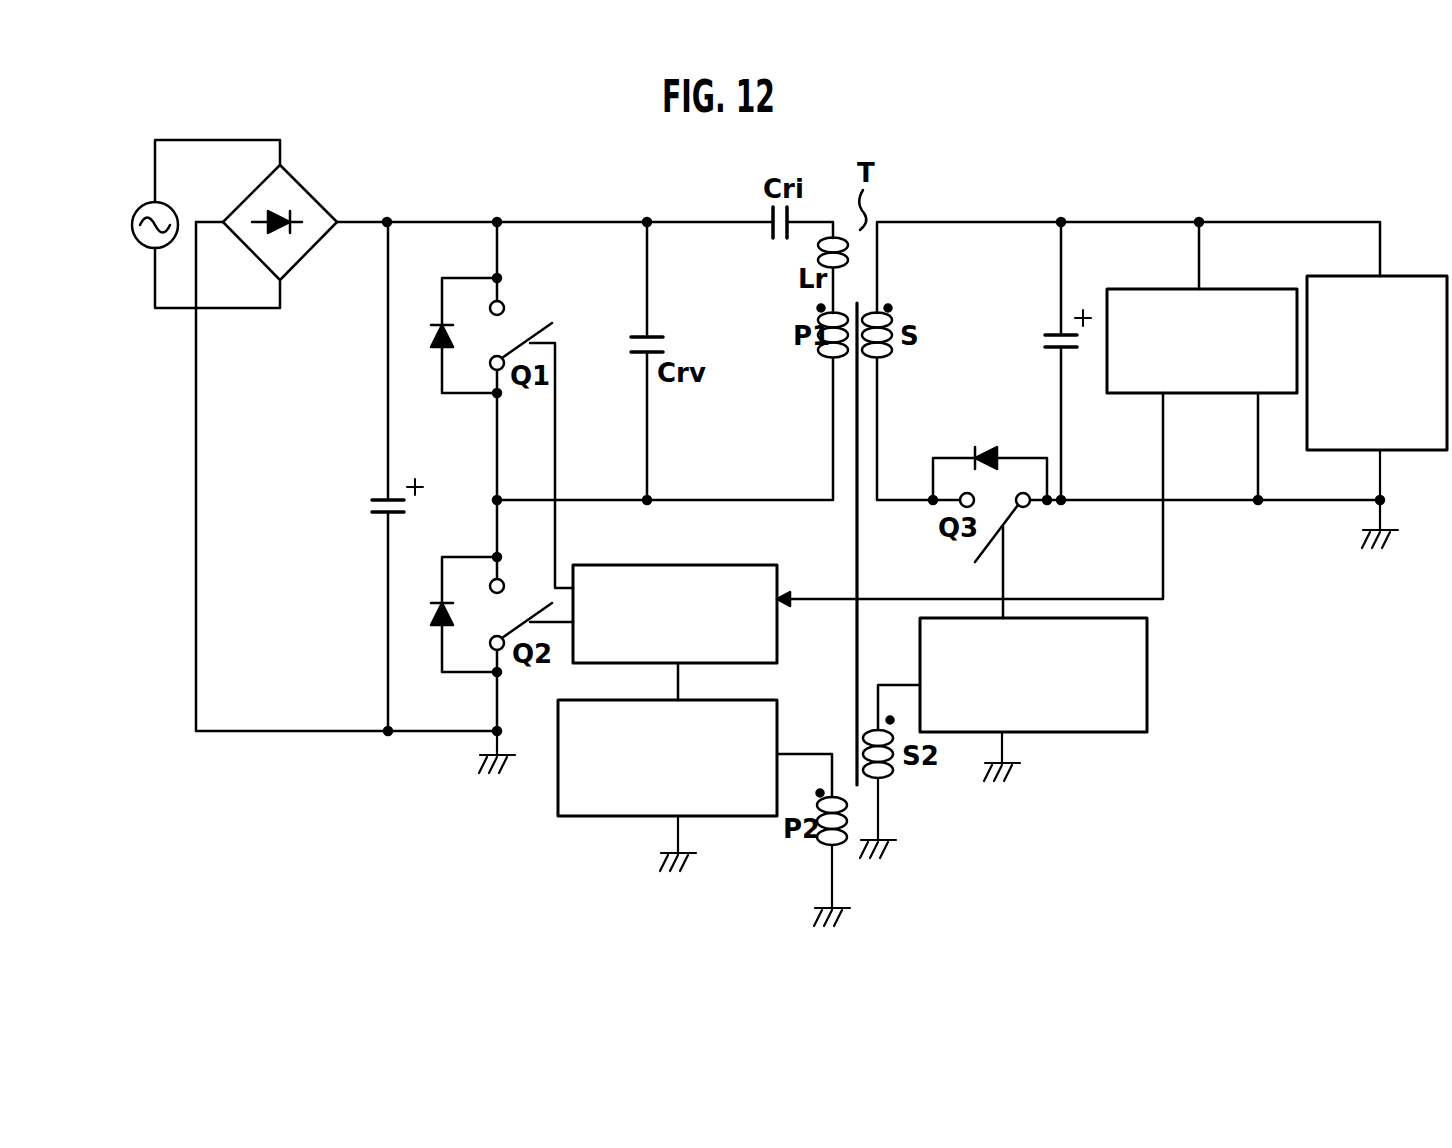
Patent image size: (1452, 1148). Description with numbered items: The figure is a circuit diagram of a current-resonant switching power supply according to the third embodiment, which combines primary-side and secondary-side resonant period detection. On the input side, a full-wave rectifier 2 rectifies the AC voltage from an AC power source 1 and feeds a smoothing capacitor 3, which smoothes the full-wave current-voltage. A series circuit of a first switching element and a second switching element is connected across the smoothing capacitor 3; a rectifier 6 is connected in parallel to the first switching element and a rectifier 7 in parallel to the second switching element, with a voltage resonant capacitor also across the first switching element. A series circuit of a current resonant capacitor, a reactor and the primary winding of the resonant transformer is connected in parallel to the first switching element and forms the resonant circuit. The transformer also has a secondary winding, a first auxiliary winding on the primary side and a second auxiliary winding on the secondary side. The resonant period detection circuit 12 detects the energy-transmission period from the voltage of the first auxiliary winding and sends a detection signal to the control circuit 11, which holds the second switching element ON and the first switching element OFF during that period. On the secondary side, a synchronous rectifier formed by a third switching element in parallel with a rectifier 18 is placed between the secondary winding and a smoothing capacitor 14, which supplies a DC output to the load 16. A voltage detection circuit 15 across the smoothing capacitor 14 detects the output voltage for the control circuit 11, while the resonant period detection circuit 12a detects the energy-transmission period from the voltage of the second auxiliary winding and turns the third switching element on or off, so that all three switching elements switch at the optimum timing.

The AC power source 1 is at (133, 204).
The full-wave rectifier 2 is at (312, 185).
The smoothing capacitor 3 is at (375, 506).
The rectifier 6 is at (438, 349).
The rectifier 7 is at (438, 627).
The control circuit 11 is at (726, 564).
The resonant period detection circuit 12 is at (740, 700).
The resonant period detection circuit 12a is at (1148, 683).
The smoothing capacitor 14 is at (1066, 350).
The voltage detection circuit 15 is at (1260, 288).
The load 16 is at (1432, 272).
The rectifier 18 is at (980, 448).